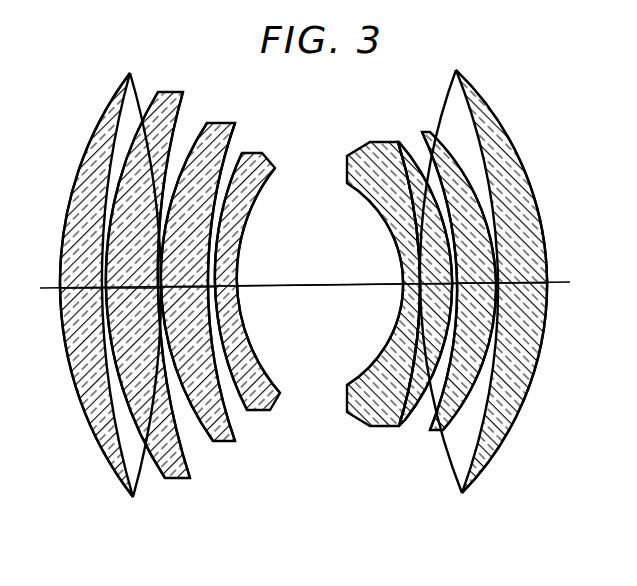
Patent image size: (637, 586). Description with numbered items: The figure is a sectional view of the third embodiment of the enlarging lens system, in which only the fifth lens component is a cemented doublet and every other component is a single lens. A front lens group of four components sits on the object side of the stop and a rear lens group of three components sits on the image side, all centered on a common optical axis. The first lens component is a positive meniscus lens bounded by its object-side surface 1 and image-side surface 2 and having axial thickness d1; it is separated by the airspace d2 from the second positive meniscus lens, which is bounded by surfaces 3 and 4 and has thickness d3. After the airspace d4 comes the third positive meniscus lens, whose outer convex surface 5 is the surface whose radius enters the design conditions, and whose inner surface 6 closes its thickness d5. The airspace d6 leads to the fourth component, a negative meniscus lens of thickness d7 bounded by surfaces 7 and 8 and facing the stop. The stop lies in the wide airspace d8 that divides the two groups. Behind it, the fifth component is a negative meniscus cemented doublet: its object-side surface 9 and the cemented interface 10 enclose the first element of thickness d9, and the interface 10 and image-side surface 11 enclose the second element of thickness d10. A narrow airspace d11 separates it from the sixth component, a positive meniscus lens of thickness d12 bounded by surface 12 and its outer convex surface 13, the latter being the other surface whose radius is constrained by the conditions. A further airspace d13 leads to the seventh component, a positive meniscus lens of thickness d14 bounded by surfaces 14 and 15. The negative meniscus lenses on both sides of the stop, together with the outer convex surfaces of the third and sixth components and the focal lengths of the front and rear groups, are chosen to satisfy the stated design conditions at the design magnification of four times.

The first lens surface 1 is at (93, 436).
The second lens surface 2 is at (137, 489).
The third lens surface 3 is at (158, 467).
The fourth lens surface 4 is at (190, 468).
The fifth lens surface 5 is at (207, 438).
The sixth lens surface 6 is at (234, 439).
The seventh lens surface 7 is at (247, 412).
The eighth lens surface 8 is at (276, 380).
The ninth lens surface 9 is at (360, 376).
The tenth lens surface 10 is at (380, 423).
The eleventh lens surface 11 is at (403, 424).
The twelfth lens surface 12 is at (428, 413).
The thirteenth lens surface 13 is at (447, 424).
The fourteenth lens surface 14 is at (462, 483).
The fifteenth lens surface 15 is at (487, 470).
The first lens thickness d1 is at (80, 288).
The first airspace d2 is at (106, 291).
The second lens thickness d3 is at (128, 288).
The second airspace d4 is at (187, 289).
The third lens thickness d5 is at (178, 288).
The third airspace d6 is at (209, 296).
The fourth lens thickness d7 is at (227, 282).
The stop airspace d8 is at (310, 283).
The fifth component first element thickness d9 is at (405, 277).
The fifth component second element thickness d10 is at (435, 284).
The fourth airspace d11 is at (460, 285).
The sixth lens thickness d12 is at (467, 283).
The fifth airspace d13 is at (500, 285).
The seventh lens thickness d14 is at (513, 283).